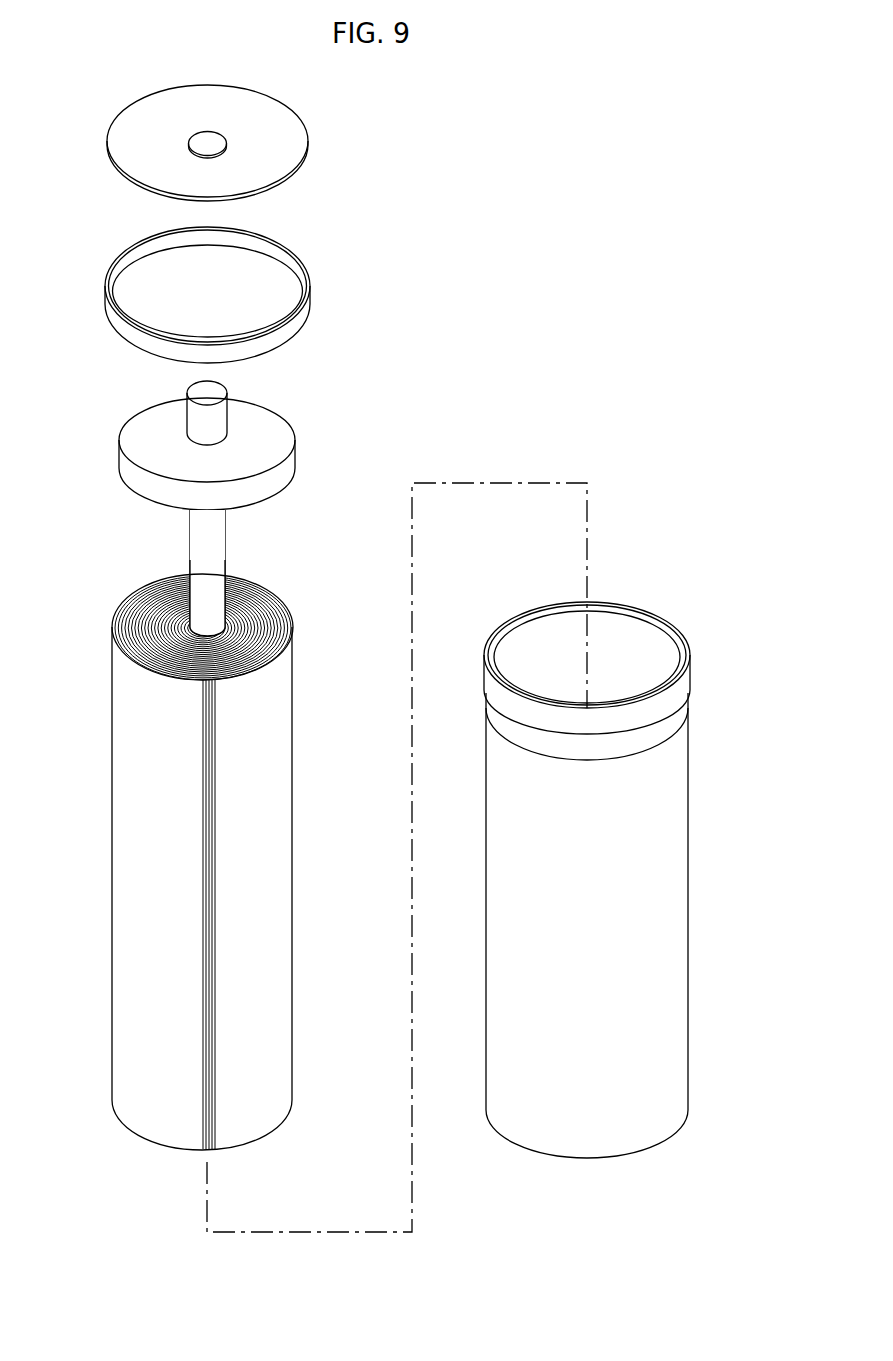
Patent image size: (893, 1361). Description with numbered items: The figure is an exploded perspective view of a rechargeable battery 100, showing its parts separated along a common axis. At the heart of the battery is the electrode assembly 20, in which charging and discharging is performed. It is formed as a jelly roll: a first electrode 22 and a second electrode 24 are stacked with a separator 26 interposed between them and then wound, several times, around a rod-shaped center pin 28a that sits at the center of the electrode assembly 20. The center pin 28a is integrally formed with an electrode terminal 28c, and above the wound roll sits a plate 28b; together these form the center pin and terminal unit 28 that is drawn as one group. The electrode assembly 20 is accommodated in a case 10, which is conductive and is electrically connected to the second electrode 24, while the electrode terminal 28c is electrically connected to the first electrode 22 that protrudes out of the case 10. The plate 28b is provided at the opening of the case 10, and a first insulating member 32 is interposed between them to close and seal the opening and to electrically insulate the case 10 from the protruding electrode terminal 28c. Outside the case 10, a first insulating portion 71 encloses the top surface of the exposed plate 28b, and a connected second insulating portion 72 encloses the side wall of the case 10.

The rechargeable battery 100 is at (410, 88).
The first insulating portion 71 is at (122, 145).
The first insulating member 32 is at (120, 325).
The center pin assembly 28 is at (248, 508).
The center pin 28a is at (261, 573).
The plate 28b is at (270, 493).
The electrode terminal 28c is at (221, 418).
The electrode assembly 20 is at (245, 830).
The first electrode 22 is at (213, 868).
The second electrode 24 is at (207, 790).
The separator 26 is at (210, 922).
The case 10 is at (615, 869).
The second insulating portion 72 is at (680, 914).